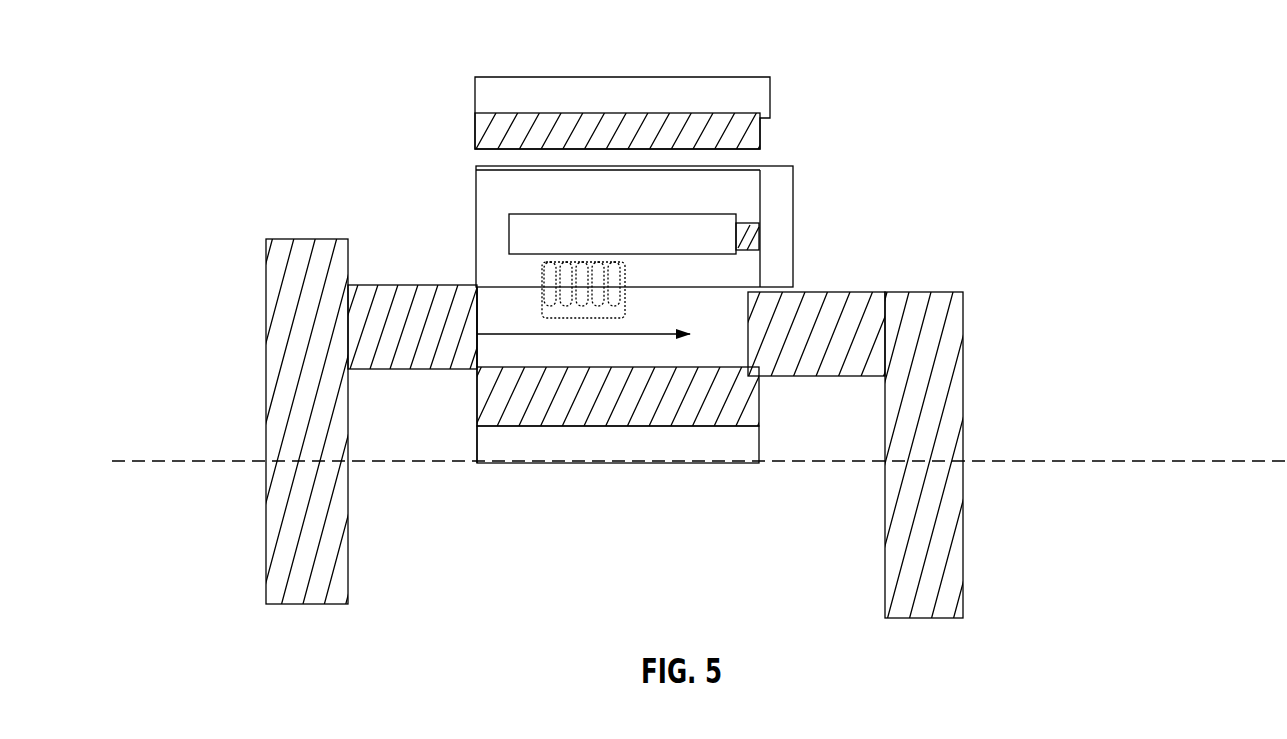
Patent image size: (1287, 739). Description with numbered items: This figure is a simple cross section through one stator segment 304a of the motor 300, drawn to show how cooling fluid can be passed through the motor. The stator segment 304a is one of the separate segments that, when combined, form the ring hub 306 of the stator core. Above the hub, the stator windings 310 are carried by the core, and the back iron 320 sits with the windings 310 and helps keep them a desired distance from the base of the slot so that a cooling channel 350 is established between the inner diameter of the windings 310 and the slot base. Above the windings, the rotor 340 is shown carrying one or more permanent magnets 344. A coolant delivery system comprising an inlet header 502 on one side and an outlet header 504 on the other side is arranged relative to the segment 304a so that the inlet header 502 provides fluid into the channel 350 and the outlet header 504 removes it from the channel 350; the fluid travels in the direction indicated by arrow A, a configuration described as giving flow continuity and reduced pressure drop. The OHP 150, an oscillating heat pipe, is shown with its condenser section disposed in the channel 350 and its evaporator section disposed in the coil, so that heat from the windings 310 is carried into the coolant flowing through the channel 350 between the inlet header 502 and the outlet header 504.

The motor 300 is at (296, 94).
The rotor 340 is at (770, 99).
The permanent magnets 344 is at (760, 132).
The stator windings 310 is at (740, 197).
The back iron 320 is at (743, 237).
The OHP 150 is at (557, 296).
The cooling channel 350 is at (713, 300).
The arrow A is at (620, 335).
The ring hub 306 is at (568, 424).
The stator segment 304a is at (485, 463).
The inlet header 502 is at (266, 387).
The outlet header 504 is at (963, 420).